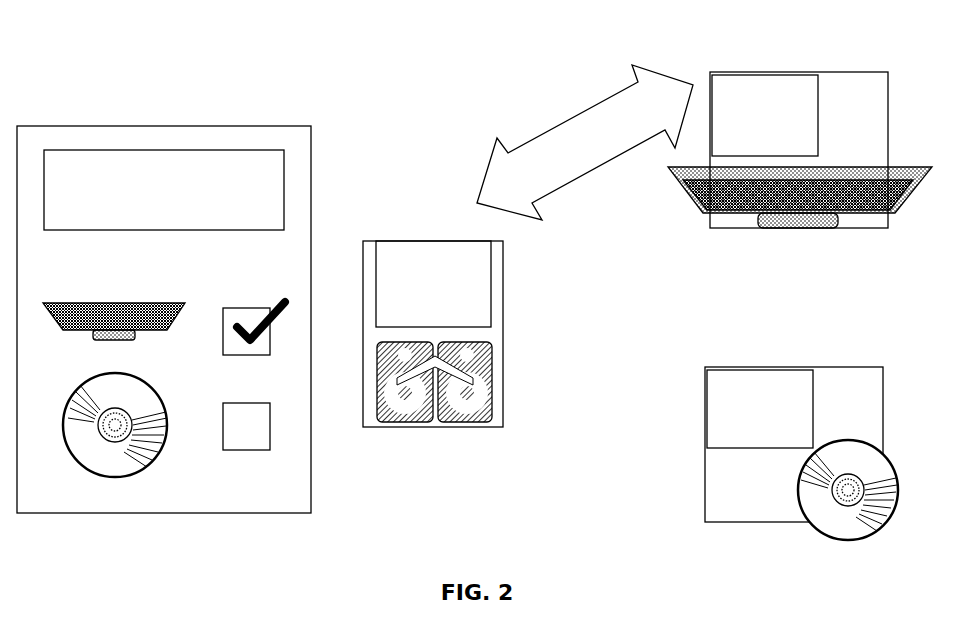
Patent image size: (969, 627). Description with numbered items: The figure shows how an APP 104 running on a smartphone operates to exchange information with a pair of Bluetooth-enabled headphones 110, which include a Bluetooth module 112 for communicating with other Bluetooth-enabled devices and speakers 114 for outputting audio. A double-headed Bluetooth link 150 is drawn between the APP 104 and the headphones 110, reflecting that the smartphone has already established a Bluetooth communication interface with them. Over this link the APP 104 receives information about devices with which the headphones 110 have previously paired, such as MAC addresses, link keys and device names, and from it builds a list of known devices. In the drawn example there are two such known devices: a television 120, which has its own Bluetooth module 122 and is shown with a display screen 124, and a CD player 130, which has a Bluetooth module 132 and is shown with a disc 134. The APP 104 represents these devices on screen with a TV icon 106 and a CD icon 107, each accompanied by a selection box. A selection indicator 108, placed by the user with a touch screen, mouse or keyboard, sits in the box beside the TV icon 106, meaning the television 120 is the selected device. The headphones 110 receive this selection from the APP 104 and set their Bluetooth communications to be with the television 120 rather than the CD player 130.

The APP 104 is at (165, 126).
The TV icon 106 is at (170, 328).
The CD icon 107 is at (133, 476).
The selection indicator 108 is at (278, 320).
The headphones 110 is at (420, 221).
The Bluetooth module 112 is at (491, 282).
The speakers 114 is at (494, 391).
The television 120 is at (853, 59).
The Bluetooth module 122 is at (765, 75).
The television display 124 is at (910, 197).
The CD player 130 is at (860, 348).
The Bluetooth module 132 is at (707, 408).
The DVD disc 134 is at (815, 538).
The Bluetooth connection 150 is at (570, 114).